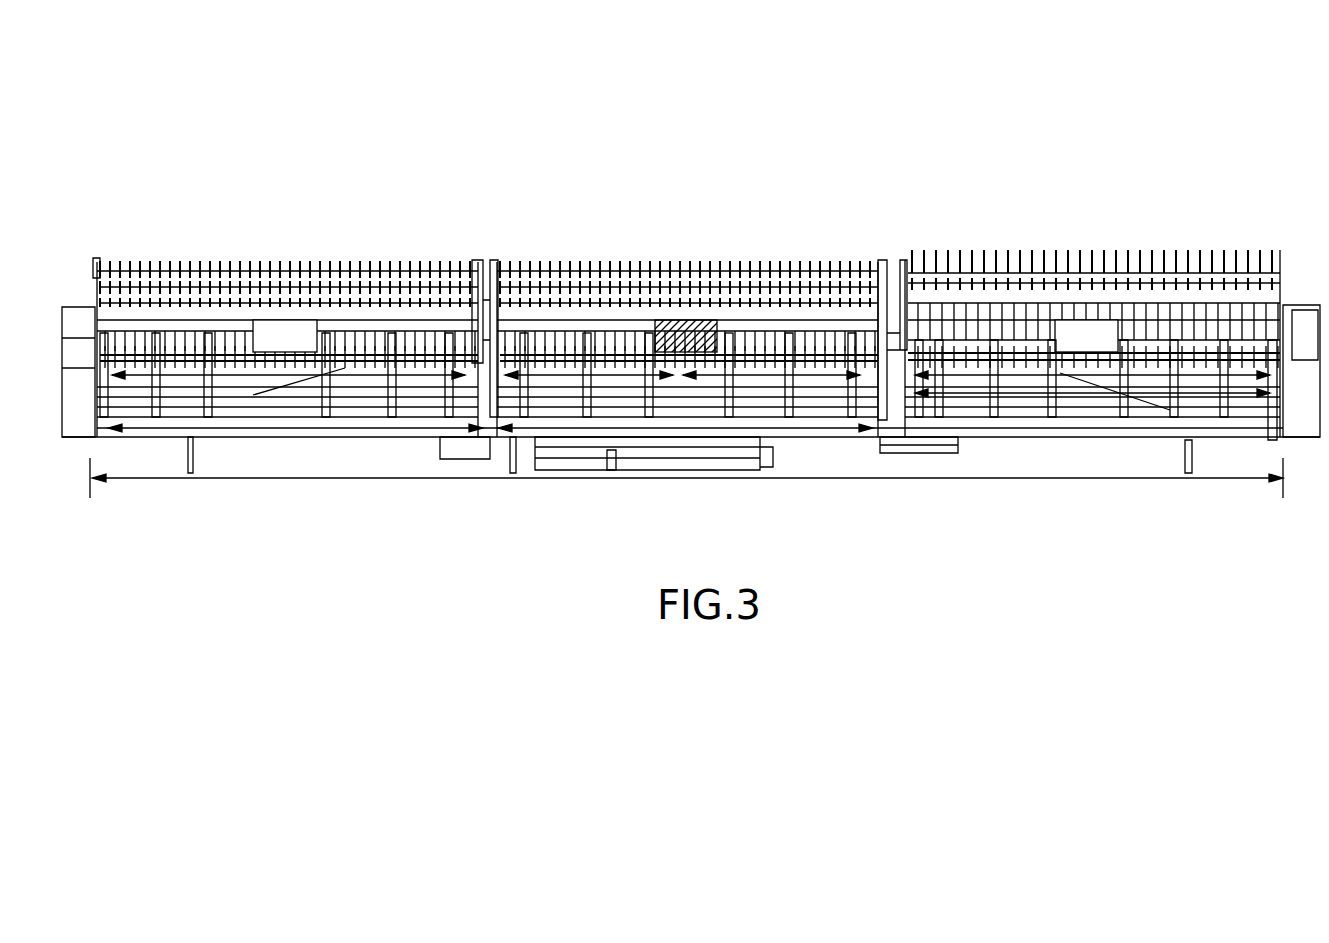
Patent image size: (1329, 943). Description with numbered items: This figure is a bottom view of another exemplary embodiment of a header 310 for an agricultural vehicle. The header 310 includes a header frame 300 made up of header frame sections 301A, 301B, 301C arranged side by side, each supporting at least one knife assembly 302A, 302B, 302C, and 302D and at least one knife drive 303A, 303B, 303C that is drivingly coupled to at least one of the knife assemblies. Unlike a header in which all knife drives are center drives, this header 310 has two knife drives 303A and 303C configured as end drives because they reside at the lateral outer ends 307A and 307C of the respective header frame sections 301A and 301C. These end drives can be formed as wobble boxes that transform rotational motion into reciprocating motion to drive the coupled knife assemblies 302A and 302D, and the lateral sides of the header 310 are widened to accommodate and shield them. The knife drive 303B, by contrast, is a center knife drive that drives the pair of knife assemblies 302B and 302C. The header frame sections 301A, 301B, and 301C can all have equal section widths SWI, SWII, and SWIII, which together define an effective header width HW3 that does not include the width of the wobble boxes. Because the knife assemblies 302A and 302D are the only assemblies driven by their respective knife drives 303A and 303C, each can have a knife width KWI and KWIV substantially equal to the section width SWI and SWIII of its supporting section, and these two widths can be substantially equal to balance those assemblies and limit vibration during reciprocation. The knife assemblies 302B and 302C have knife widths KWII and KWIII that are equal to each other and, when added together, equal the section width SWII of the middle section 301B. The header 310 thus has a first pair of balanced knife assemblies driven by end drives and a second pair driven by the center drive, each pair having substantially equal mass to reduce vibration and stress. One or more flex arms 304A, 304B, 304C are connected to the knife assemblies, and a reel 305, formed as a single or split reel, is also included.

The header frame 300 is at (813, 455).
The header frame section 301A is at (330, 437).
The header frame section 301B is at (828, 437).
The header frame section 301C is at (1083, 423).
The knife assembly 302A is at (345, 337).
The knife assembly 302B is at (622, 335).
The knife assembly 302C is at (750, 337).
The knife assembly 302D is at (1205, 330).
The knife drive 303A is at (79, 340).
The knife drive 303B is at (680, 350).
The knife drive 303C is at (1305, 330).
The flex arm 304A is at (172, 437).
The flex arm 304B is at (523, 423).
The flex arm 304C is at (977, 420).
The reel 305 is at (895, 255).
The lateral outer end 307A is at (78, 433).
The lateral outer end 307C is at (1300, 425).
The header 310 is at (878, 148).
The knife width KWI is at (226, 372).
The knife width KWII is at (553, 420).
The knife width KWIII is at (812, 377).
The knife width KWIV is at (1145, 342).
The section width SWI is at (303, 430).
The section width SWII is at (597, 430).
The section width SWIII is at (1017, 420).
The effective header width HW3 is at (654, 471).